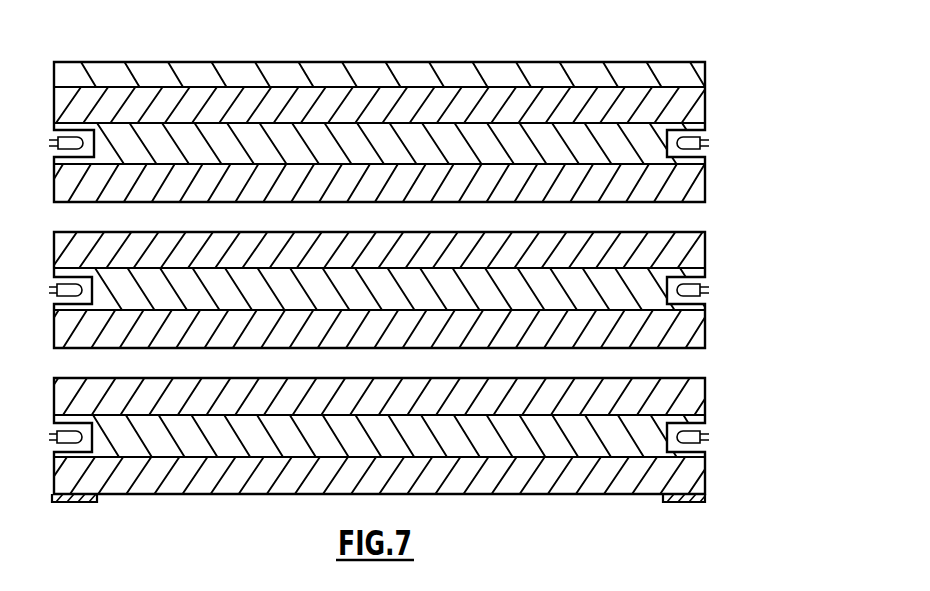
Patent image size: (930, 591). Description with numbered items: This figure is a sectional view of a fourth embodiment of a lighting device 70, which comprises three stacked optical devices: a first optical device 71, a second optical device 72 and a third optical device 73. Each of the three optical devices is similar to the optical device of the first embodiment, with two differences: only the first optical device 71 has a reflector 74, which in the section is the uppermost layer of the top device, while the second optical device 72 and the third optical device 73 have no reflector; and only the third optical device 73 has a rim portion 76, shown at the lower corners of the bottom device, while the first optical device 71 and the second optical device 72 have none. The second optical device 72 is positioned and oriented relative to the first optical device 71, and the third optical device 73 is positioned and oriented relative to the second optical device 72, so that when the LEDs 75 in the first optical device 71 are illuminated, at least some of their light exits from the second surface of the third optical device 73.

The lighting device 70 is at (706, 43).
The first optical device 71 is at (406, 130).
The second optical device 72 is at (725, 227).
The third optical device 73 is at (405, 468).
The reflector 74 is at (496, 75).
The LEDs 75 is at (73, 141).
The rim portion 76 is at (72, 503).